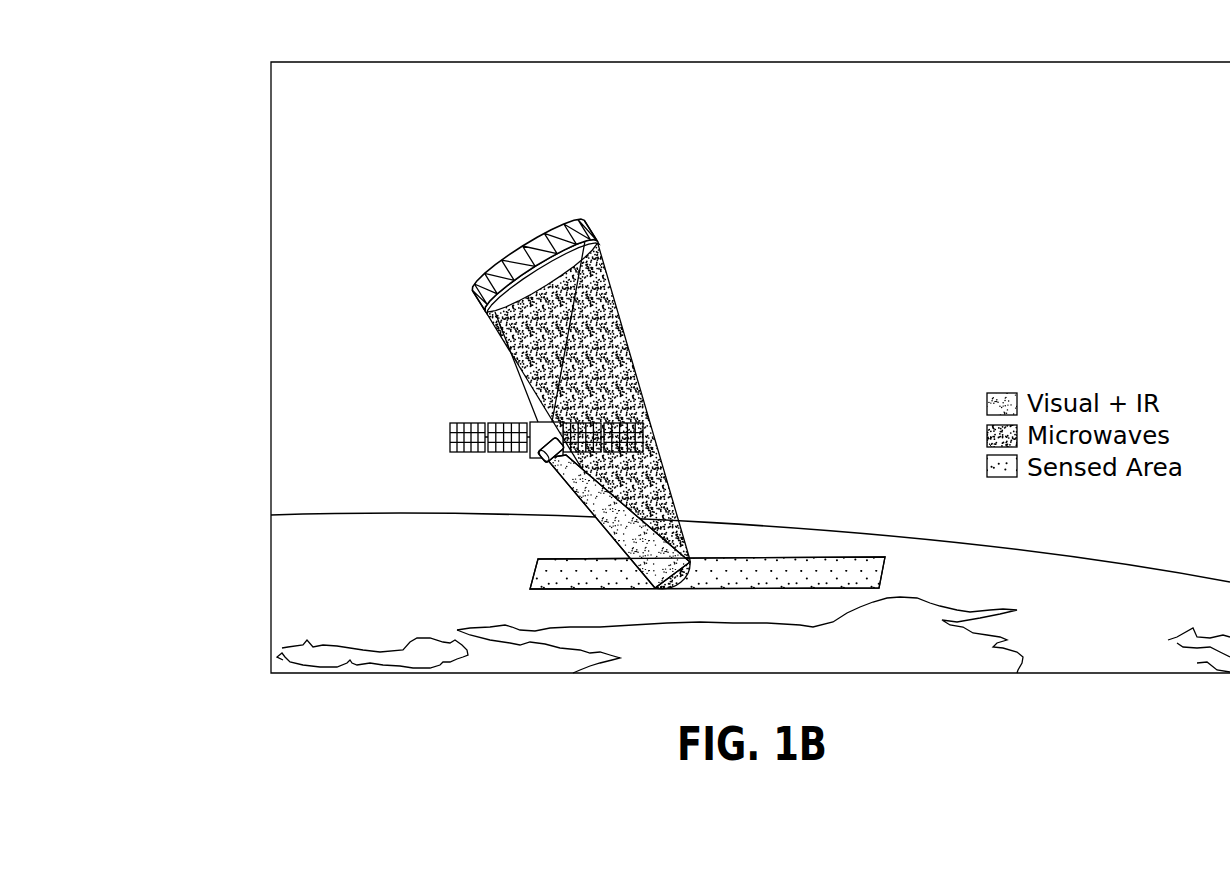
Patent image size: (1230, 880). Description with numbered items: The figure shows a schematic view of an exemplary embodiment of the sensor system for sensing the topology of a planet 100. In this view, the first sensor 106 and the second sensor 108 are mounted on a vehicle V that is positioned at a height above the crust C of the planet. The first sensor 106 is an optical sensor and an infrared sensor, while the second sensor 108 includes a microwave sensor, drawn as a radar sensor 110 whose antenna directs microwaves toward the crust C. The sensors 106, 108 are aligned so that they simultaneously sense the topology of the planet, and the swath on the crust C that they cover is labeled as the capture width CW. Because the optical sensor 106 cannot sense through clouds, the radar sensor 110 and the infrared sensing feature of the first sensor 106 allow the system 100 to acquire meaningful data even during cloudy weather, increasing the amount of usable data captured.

The sensor system for sensing the topology of a planet 100 is at (353, 38).
The first sensor 106 is at (545, 470).
The second sensor 108 is at (424, 480).
The radar sensor 110 is at (491, 242).
The vehicle V is at (465, 424).
The capture width sensed area CW is at (759, 557).
The crust C is at (845, 528).